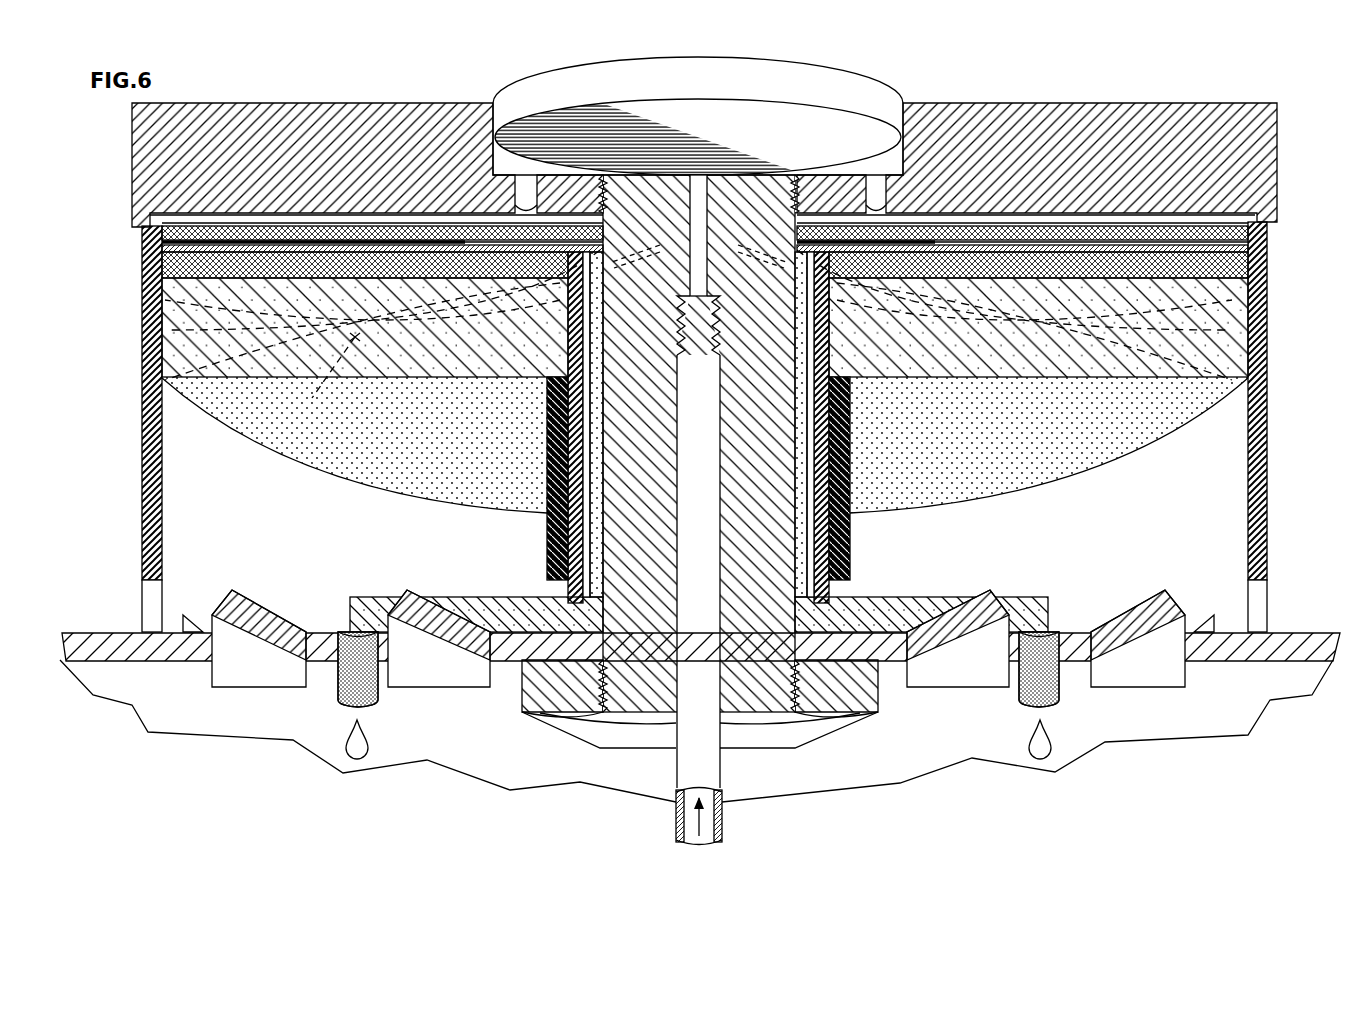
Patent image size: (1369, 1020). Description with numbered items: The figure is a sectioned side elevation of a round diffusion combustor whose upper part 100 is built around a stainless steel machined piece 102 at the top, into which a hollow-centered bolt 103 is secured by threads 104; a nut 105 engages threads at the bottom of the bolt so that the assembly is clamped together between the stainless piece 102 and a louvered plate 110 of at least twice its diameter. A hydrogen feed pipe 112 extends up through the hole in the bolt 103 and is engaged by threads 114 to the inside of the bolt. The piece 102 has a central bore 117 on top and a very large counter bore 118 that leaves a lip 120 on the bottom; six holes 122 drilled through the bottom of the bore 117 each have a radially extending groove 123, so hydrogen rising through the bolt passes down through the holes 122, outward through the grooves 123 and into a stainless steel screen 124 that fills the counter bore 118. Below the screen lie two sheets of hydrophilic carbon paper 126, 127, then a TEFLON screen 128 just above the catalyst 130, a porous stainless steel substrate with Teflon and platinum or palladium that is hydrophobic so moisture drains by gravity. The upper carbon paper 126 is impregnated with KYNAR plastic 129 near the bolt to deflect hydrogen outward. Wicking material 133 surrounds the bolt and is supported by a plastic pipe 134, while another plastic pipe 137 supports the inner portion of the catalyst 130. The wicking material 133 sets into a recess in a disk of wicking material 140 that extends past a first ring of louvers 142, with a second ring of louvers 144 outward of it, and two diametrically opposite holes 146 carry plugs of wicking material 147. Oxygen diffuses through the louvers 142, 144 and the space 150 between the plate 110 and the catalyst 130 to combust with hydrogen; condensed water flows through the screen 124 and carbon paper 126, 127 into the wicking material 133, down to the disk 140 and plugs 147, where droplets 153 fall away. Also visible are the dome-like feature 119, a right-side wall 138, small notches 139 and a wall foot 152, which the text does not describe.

The upper part 100 is at (276, 93).
The stainless steel machined piece 102 is at (402, 105).
The hollow-centered bolt 103 is at (752, 172).
The threads 104 is at (792, 185).
The nut 105 is at (827, 722).
The louvered plate 110 is at (1278, 625).
The hydrogen feed pipe 112 is at (720, 766).
The threads 114 is at (698, 481).
The central bore 117 is at (897, 113).
The counter bore 118 is at (354, 423).
The gas space 119 is at (717, 83).
The lip 120 is at (150, 228).
The holes 122 is at (517, 203).
The radially extending groove 123 is at (392, 214).
The stainless steel screen 124 is at (1205, 228).
The hydrophilic carbon paper 126 is at (1262, 243).
The hydrophilic carbon paper 127 is at (1265, 250).
The TEFLON screen 128 is at (1130, 275).
The KYNAR plastic 129 is at (610, 243).
The catalyst 130 is at (1233, 358).
The wicking material 133 is at (806, 440).
The plastic pipe 134 is at (855, 592).
The plastic pipe 137 is at (850, 527).
The right side wall 138 is at (1250, 470).
The drain notch 139 is at (172, 614).
The disk of wicking material 140 is at (1010, 592).
The first ring of louvers 142 is at (412, 592).
The second ring of louvers 144 is at (240, 592).
The holes 146 is at (345, 632).
The plugs of wicking material 147 is at (377, 705).
The space 150 is at (1080, 513).
The wall foot 152 is at (142, 625).
The droplets 153 is at (352, 742).